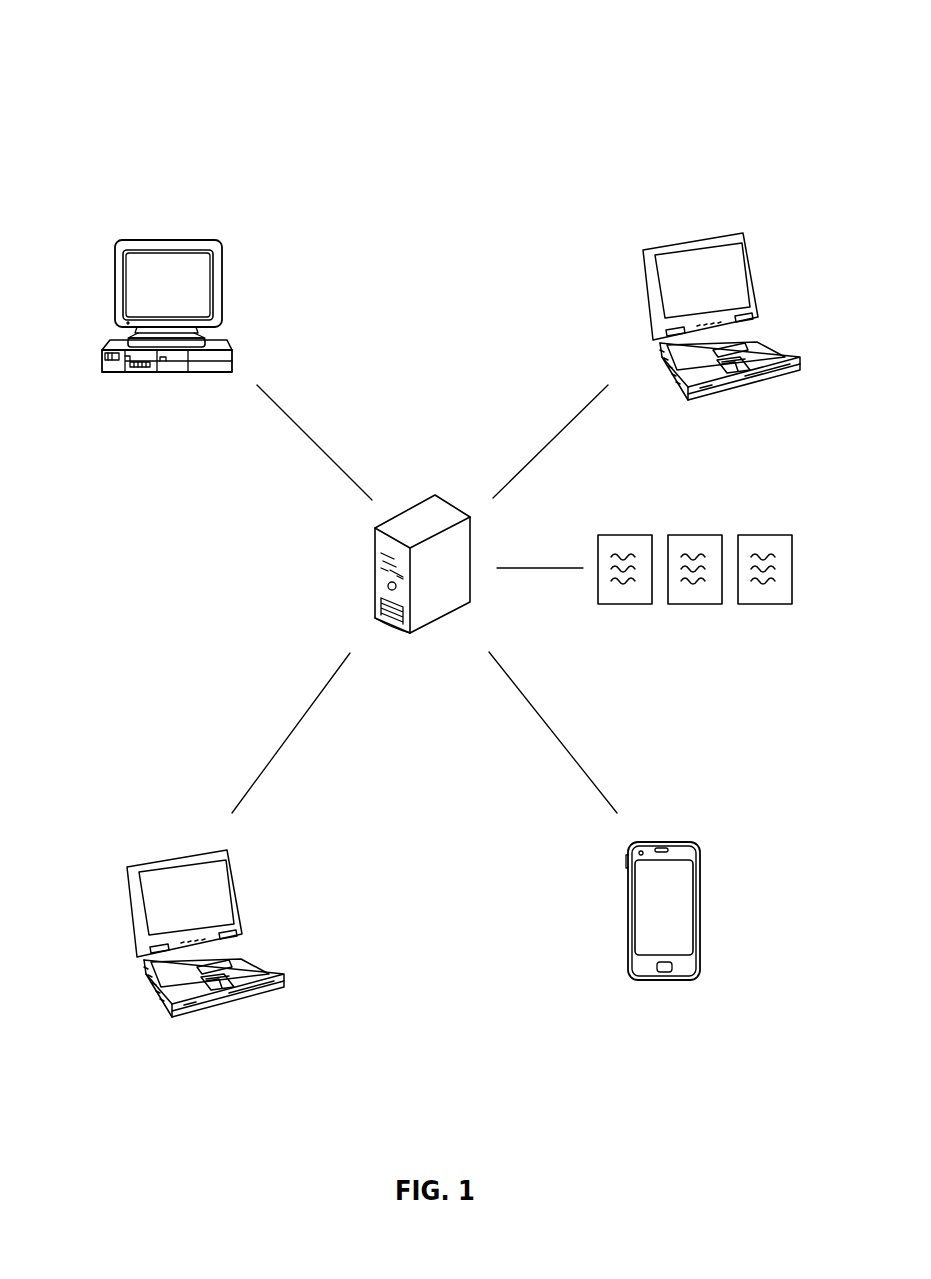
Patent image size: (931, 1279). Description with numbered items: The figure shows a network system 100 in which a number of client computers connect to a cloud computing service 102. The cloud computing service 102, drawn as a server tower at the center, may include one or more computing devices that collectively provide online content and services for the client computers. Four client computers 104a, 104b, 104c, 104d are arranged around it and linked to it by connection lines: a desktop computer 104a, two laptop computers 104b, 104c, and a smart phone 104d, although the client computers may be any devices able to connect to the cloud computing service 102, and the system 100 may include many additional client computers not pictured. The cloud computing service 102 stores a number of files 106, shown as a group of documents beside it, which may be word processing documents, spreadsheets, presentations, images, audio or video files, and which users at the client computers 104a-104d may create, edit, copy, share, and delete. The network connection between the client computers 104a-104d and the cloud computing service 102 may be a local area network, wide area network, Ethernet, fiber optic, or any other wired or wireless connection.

The network system 100 is at (266, 56).
The cloud computing service 102 is at (432, 492).
The client computer 104a is at (142, 233).
The client computer 104b is at (657, 245).
The client computer 104c is at (142, 863).
The client computer 104d is at (668, 840).
The files 106 is at (685, 515).